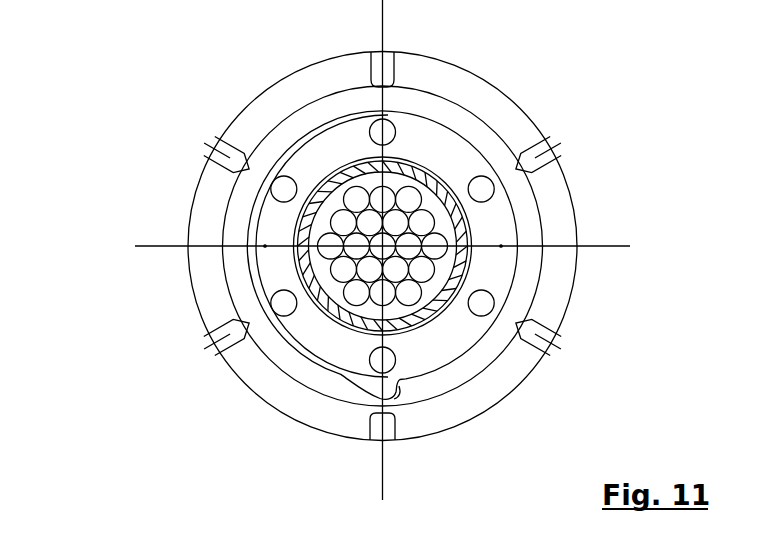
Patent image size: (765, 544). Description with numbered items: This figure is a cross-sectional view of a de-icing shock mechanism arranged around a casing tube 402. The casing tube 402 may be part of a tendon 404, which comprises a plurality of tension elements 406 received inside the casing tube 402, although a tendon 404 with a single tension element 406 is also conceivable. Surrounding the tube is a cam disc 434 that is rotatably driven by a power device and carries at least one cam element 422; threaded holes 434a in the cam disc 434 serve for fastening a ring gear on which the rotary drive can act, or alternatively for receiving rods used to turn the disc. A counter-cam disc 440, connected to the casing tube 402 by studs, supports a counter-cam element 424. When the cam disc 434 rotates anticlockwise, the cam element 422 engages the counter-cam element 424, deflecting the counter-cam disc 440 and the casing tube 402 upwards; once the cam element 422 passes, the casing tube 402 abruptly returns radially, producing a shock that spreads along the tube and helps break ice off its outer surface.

The casing tube 402 is at (310, 225).
The tendon 404 is at (323, 265).
The tension element 406 is at (373, 265).
The cam element 422 is at (407, 390).
The counter-cam element 424 is at (383, 392).
The cam disc 434 is at (515, 125).
The threaded holes 434a is at (548, 331).
The counter-cam disc 440 is at (493, 220).